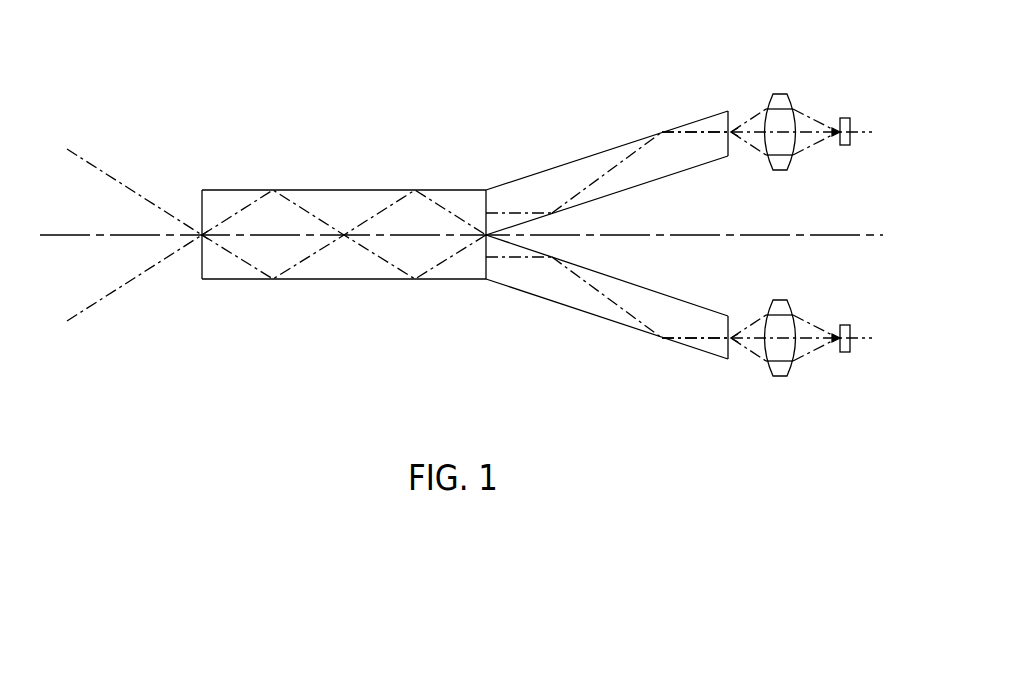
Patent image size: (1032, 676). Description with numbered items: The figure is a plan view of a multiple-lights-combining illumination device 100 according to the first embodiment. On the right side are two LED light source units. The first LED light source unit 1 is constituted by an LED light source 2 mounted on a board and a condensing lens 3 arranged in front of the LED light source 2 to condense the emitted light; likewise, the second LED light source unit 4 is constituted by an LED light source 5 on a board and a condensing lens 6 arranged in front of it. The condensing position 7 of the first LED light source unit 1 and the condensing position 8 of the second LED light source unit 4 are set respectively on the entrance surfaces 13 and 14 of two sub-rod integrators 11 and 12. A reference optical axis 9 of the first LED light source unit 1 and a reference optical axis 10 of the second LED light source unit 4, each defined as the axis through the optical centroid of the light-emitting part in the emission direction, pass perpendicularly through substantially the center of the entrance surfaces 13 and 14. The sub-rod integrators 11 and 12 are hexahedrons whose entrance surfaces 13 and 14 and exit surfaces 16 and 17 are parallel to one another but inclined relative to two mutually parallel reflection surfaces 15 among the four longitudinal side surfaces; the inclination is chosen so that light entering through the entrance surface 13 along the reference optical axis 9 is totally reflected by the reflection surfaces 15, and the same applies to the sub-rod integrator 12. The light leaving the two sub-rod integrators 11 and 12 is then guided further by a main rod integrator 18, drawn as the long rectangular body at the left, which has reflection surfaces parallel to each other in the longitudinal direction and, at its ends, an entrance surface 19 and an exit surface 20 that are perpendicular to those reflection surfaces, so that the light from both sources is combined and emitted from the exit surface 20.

The multiple-lights-combining illumination device 100 is at (327, 119).
The first LED light source unit 1 is at (848, 83).
The LED light source 2 is at (845, 146).
The condensing lens 3 is at (779, 170).
The second LED light source unit 4 is at (848, 385).
The LED light source 5 is at (845, 326).
The condensing lens 6 is at (781, 300).
The condensing position 7 is at (729, 128).
The condensing position 8 is at (729, 340).
The reference optical axis 9 is at (862, 128).
The reference optical axis 10 is at (862, 348).
The sub-rod integrator 11 is at (568, 175).
The sub-rod integrator 12 is at (568, 297).
The entrance surface 13 is at (732, 143).
The entrance surface 14 is at (733, 318).
The reflection surfaces 15 is at (607, 148).
The exit surface 16 is at (503, 203).
The exit surface 17 is at (489, 268).
The main rod integrator 18 is at (222, 203).
The entrance surface 19 is at (486, 258).
The exit surface 20 is at (202, 250).